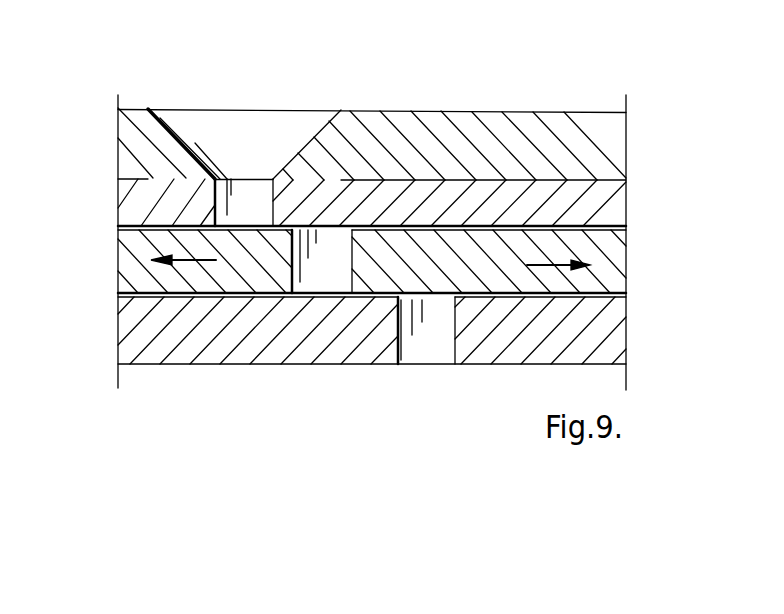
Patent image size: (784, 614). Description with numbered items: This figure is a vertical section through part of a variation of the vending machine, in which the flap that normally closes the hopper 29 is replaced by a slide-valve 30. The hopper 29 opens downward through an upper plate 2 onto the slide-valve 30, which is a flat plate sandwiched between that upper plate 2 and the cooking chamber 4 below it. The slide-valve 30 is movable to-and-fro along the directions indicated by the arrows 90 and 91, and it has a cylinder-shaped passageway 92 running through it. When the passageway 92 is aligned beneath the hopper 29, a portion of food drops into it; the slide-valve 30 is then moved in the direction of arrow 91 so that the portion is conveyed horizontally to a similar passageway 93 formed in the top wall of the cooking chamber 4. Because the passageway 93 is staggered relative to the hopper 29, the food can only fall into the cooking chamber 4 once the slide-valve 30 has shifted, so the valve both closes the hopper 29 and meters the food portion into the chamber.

The upper plate 2 is at (476, 135).
The cooking chamber 4 is at (595, 333).
The hopper 29 is at (278, 133).
The slide-valve 30 is at (129, 259).
The arrow 90 is at (145, 228).
The arrow 91 is at (592, 230).
The cylinder-shaped passageway 92 is at (342, 274).
The passageway 93 is at (417, 346).